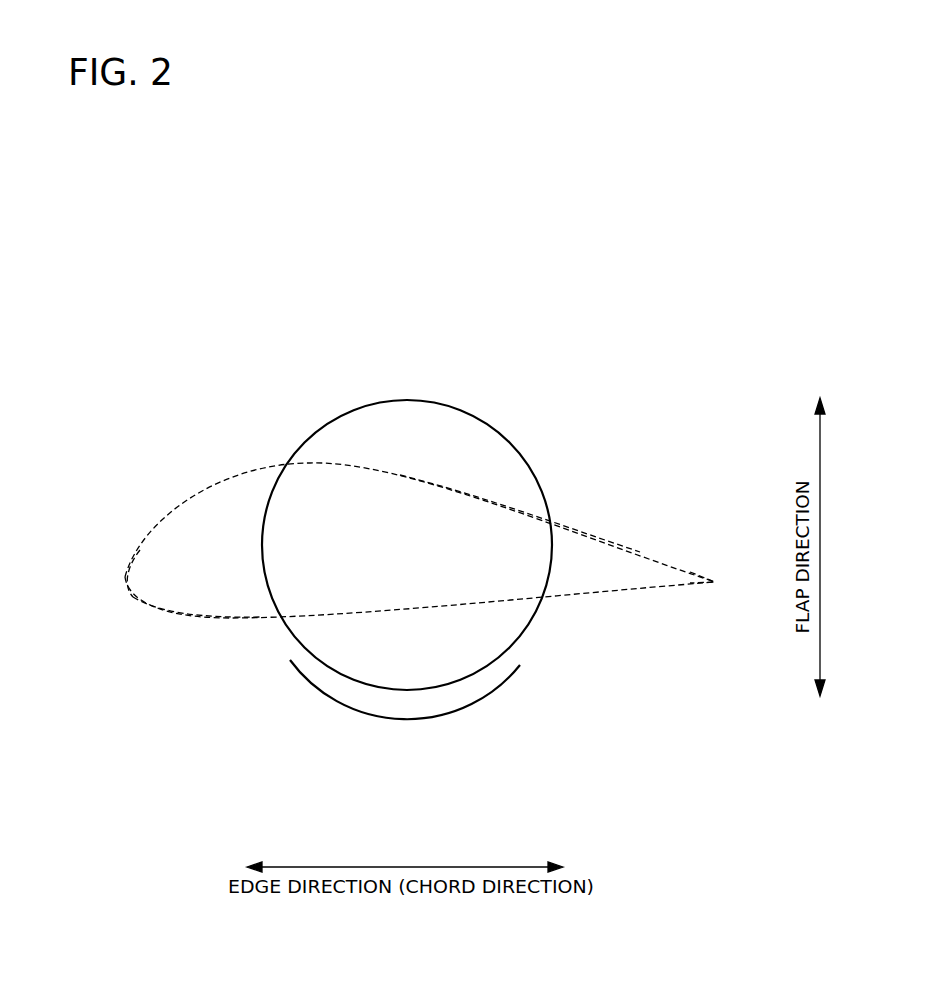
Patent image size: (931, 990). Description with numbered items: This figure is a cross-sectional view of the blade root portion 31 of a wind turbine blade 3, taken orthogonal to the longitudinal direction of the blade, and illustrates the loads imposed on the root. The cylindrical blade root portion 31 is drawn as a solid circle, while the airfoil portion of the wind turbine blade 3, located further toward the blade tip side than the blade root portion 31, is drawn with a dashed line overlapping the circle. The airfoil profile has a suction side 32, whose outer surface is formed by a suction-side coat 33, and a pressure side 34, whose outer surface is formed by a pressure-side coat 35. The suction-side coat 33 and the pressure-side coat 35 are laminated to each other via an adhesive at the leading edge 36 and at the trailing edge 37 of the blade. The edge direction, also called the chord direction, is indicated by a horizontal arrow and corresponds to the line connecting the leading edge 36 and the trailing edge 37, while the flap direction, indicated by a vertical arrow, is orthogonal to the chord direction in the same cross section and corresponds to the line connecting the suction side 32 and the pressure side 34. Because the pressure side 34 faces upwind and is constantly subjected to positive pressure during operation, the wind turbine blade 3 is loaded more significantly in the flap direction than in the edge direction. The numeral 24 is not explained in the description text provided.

The wind turbine blade 3 is at (413, 503).
The leading edge region / circle 24 is at (443, 757).
The blade root portion 31 is at (534, 617).
The suction side 32 is at (254, 408).
The suction-side coat 33 is at (580, 527).
The pressure side 34 is at (336, 691).
The pressure-side coat 35 is at (213, 617).
The leading edge 36 is at (125, 580).
The trailing edge 37 is at (717, 585).